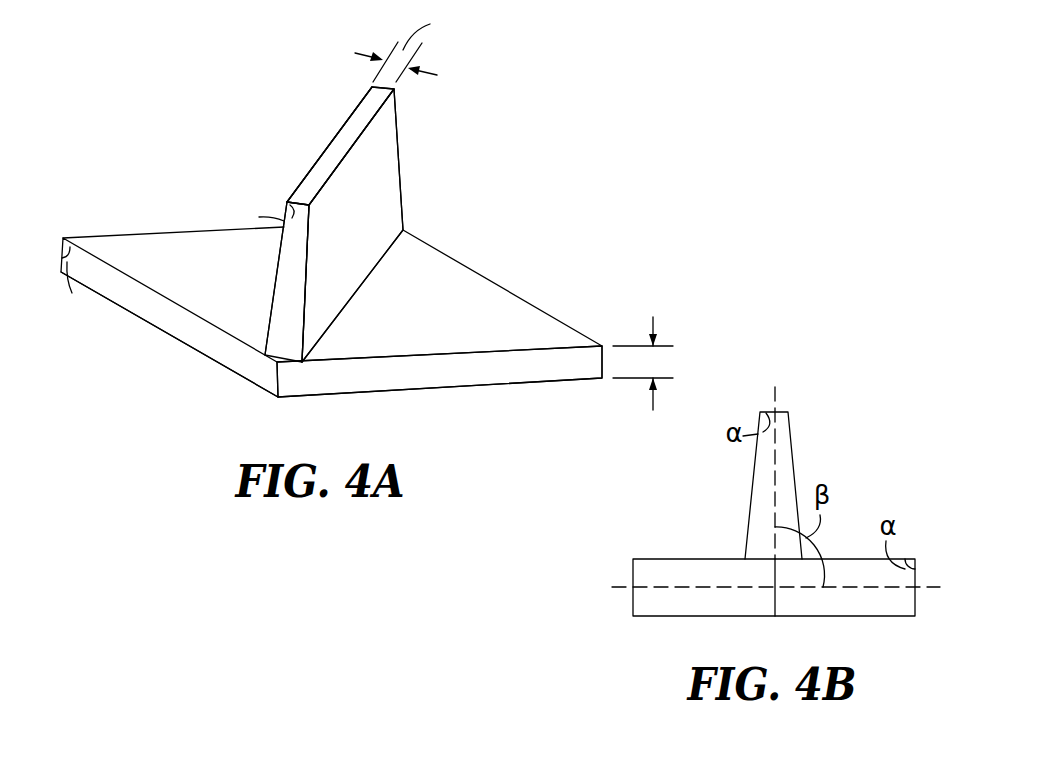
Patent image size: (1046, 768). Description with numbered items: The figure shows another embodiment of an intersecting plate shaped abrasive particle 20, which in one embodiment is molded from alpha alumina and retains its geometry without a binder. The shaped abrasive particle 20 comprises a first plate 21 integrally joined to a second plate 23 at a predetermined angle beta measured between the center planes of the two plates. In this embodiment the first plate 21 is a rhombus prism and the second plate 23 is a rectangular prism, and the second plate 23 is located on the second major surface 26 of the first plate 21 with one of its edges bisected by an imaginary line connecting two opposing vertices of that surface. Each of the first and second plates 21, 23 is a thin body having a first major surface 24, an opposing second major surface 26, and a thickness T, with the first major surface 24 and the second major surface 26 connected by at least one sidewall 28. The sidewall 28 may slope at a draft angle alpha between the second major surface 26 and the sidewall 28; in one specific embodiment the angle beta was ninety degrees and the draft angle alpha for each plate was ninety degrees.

The shaped abrasive particle 20 is at (211, 118).
The first plate 21 is at (421, 396).
The second plate 23 is at (407, 171).
The first major surface 24 is at (332, 237).
The second major surface 26 is at (223, 291).
The sidewall 28 is at (365, 116).